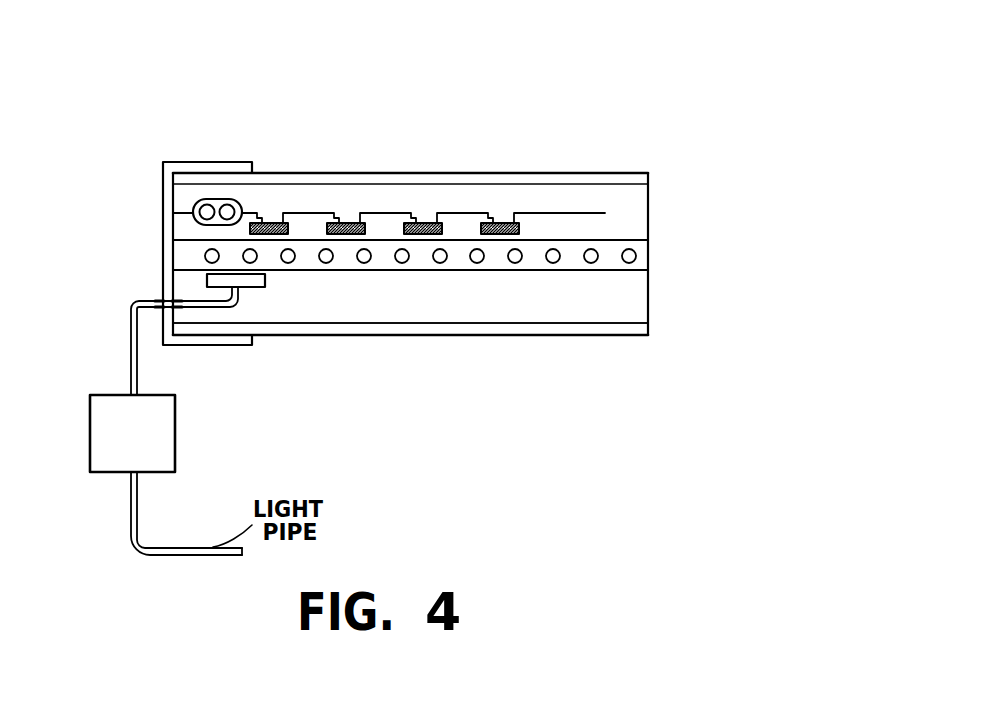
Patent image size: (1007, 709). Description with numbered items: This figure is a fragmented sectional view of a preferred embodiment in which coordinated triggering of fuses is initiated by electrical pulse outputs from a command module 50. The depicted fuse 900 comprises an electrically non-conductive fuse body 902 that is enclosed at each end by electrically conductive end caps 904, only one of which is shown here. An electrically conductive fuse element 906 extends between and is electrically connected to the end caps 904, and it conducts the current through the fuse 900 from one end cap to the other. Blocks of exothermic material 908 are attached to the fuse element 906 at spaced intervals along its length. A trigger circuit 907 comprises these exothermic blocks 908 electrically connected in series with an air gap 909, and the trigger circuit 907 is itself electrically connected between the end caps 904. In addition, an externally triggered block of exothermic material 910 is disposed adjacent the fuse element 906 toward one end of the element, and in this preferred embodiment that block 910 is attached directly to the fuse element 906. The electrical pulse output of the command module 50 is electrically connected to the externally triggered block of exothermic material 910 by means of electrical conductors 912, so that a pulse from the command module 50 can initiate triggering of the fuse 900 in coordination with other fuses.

The fuse 900 is at (622, 90).
The fuse body 902 is at (529, 174).
The end caps 904 is at (181, 162).
The fuse element 906 is at (573, 272).
The trigger circuit 907 is at (588, 212).
The blocks of exothermic material 908 is at (343, 222).
The air gap 909 is at (236, 200).
The externally triggered block of exothermic material 910 is at (272, 294).
The electrical conductors 912 is at (128, 333).
The command module 50 is at (107, 394).